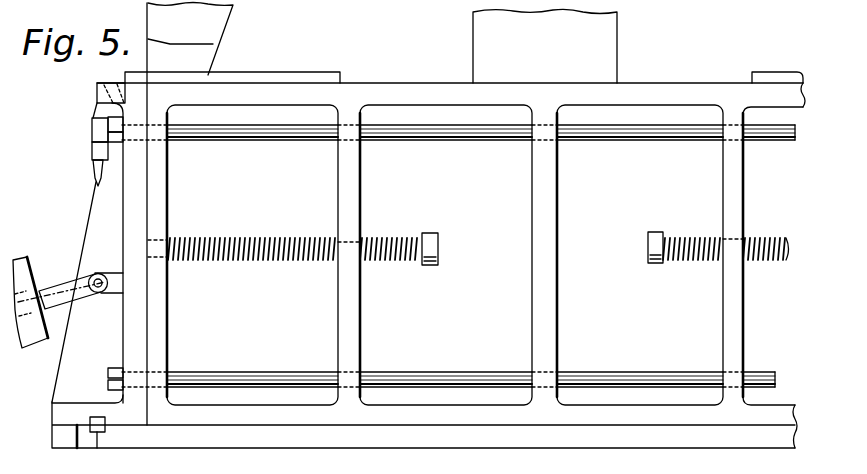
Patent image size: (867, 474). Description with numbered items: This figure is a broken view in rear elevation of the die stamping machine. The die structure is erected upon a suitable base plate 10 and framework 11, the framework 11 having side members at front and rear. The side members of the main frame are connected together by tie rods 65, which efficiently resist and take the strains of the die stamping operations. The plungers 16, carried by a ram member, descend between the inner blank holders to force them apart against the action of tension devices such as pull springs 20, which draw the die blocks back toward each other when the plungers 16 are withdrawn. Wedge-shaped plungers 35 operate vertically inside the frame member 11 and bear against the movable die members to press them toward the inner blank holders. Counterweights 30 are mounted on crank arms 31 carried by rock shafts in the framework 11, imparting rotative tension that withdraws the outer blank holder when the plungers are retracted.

The base plate 10 is at (229, 439).
The framework 11 is at (127, 193).
The plungers 16 is at (482, 51).
The pull springs 20 is at (272, 262).
The counterweights 30 is at (42, 251).
The crank arms 31 is at (57, 288).
The wedge-shaped plungers 35 is at (221, 37).
The tie rods 65 is at (450, 133).